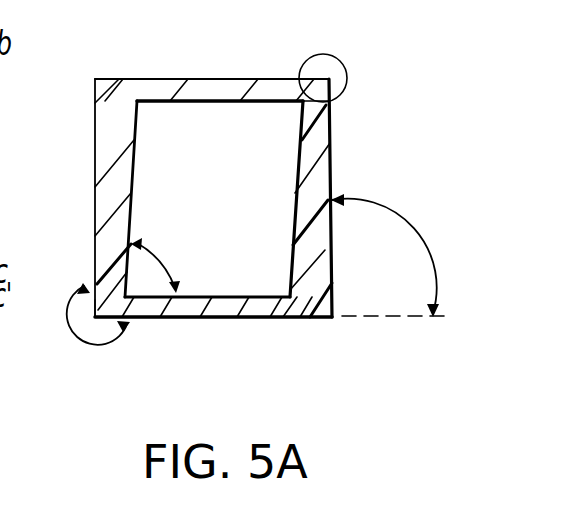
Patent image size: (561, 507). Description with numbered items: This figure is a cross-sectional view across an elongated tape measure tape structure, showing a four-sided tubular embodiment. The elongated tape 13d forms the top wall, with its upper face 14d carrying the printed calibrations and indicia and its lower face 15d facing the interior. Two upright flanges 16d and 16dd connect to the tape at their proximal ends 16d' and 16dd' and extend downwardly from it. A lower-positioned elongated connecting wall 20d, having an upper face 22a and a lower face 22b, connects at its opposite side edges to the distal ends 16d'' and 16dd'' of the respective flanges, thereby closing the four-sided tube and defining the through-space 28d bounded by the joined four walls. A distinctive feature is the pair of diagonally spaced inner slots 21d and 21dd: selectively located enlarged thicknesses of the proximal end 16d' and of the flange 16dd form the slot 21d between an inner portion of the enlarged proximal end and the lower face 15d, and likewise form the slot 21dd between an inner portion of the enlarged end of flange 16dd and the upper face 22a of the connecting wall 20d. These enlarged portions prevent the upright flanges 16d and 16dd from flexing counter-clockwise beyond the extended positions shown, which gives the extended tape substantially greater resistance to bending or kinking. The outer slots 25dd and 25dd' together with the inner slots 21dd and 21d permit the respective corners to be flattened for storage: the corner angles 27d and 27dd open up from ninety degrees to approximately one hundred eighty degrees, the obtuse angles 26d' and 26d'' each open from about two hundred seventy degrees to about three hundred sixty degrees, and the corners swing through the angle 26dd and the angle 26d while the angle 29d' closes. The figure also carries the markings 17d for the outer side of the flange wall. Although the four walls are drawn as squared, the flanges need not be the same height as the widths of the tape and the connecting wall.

The elongated tape 13d is at (188, 98).
The upper face 14d is at (229, 98).
The lower face 15d is at (237, 104).
The inner slot 21d is at (126, 97).
The left outer wall 17d is at (96, 168).
The angle 27d is at (147, 128).
The proximal end 16d' is at (87, 148).
The upright flange 16d is at (85, 214).
The distal end 16d'' is at (81, 272).
The angle of inner left surface 26d is at (154, 245).
The elongated connecting wall 20d is at (232, 320).
The lower face 22b is at (150, 318).
The upper face 22a is at (198, 273).
The angle 27dd is at (280, 258).
The inner slot 21dd is at (297, 320).
The outer slot 25dd' is at (127, 349).
The obtuse angle 26d' is at (72, 325).
The upright flange 16dd is at (365, 198).
The inner right surface 29d' is at (264, 199).
The through-space 28d is at (240, 178).
The proximal end 16dd' is at (375, 107).
The distal end 16dd'' is at (355, 245).
The outer slot 25dd is at (358, 77).
The obtuse angle 26d'' is at (347, 54).
The angle 26dd is at (393, 221).